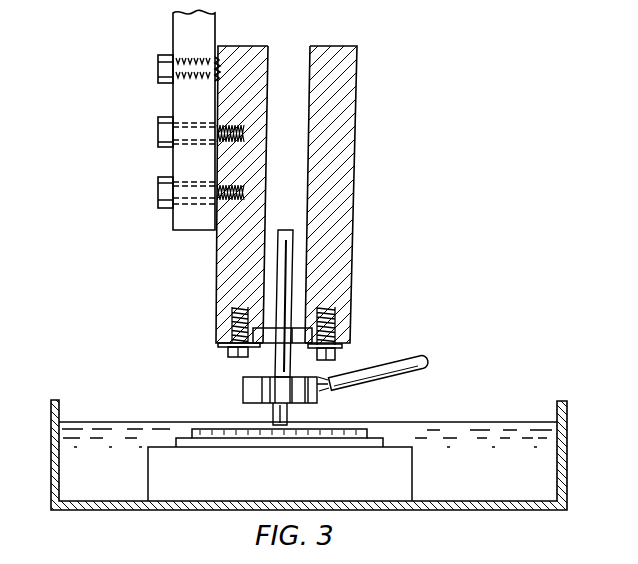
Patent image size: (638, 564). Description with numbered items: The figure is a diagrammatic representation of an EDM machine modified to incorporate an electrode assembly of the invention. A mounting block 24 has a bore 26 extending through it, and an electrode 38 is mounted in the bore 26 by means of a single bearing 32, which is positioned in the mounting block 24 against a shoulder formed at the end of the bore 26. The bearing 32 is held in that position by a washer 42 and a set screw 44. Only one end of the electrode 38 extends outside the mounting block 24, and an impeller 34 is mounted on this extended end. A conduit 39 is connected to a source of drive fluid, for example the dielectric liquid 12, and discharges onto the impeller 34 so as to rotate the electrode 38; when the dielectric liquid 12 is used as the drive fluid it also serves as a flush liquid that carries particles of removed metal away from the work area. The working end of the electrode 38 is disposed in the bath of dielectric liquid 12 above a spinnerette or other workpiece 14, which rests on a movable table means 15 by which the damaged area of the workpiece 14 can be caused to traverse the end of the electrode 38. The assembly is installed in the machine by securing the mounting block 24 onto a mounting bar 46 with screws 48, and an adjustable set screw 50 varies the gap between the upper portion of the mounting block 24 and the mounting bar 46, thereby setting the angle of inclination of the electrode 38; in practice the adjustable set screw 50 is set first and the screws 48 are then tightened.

The dielectric liquid 12 is at (505, 479).
The workpiece 14 is at (378, 437).
The movable table means 15 is at (402, 455).
The mounting block 24 is at (354, 192).
The bore 26 is at (310, 65).
The bearing 32 is at (265, 349).
The impeller 34 is at (243, 393).
The electrode 38 is at (273, 412).
The conduit 39 is at (398, 361).
The washer 42 is at (228, 347).
The set screw 44 is at (230, 350).
The mounting bar 46 is at (173, 33).
The screw 48 is at (158, 191).
The adjustable set screw 50 is at (160, 70).